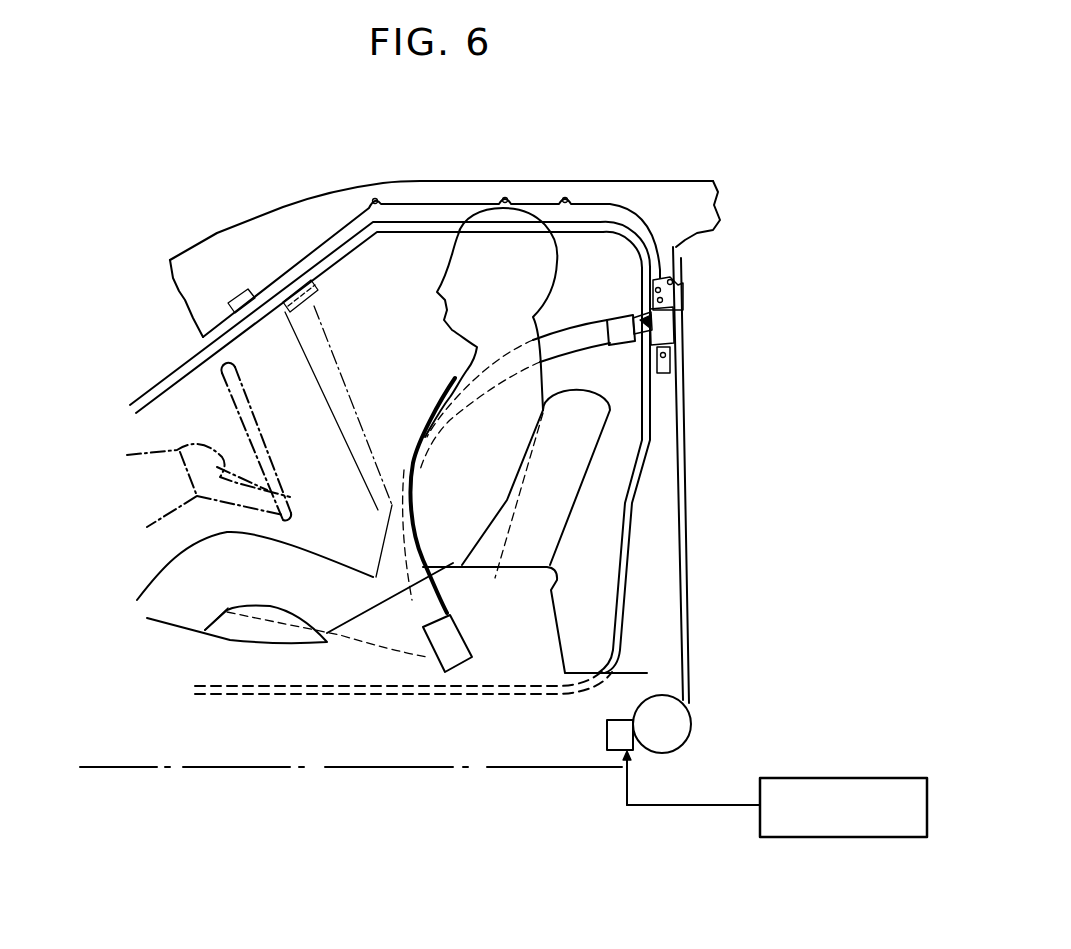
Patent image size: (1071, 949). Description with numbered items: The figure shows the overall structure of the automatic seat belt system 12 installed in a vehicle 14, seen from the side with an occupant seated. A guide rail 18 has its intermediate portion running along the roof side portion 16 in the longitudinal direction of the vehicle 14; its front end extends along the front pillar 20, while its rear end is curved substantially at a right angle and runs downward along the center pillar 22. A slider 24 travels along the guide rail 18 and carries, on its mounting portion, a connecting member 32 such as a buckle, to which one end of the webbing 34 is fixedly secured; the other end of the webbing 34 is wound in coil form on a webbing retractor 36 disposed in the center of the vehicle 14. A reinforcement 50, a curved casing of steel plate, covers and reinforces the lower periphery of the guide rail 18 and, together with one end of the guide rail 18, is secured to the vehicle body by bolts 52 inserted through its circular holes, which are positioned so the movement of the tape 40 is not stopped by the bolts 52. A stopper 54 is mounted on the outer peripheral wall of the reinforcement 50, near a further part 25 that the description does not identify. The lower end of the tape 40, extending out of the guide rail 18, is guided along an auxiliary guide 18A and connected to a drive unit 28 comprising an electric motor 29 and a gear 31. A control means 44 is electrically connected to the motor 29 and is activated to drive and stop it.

The automatic seat belt system 12 is at (473, 196).
The vehicle 14 is at (645, 172).
The roof side portion 16 is at (403, 184).
The guide rail 18 is at (489, 202).
The auxiliary guide 18A is at (690, 523).
The front pillar 20 is at (196, 254).
The center pillar 22 is at (670, 235).
The slider 24 is at (633, 316).
The lower bracket 25 is at (656, 350).
The drive unit 28 is at (700, 758).
The electric motor 29 is at (605, 736).
The gear 31 is at (692, 722).
The connecting member 32 is at (626, 343).
The webbing 34 is at (582, 338).
The webbing retractor 36 is at (465, 640).
The tape 40 is at (690, 578).
The control means 44 is at (873, 838).
The reinforcement 50 is at (684, 295).
The bolts 52 is at (690, 280).
The stopper 54 is at (686, 325).